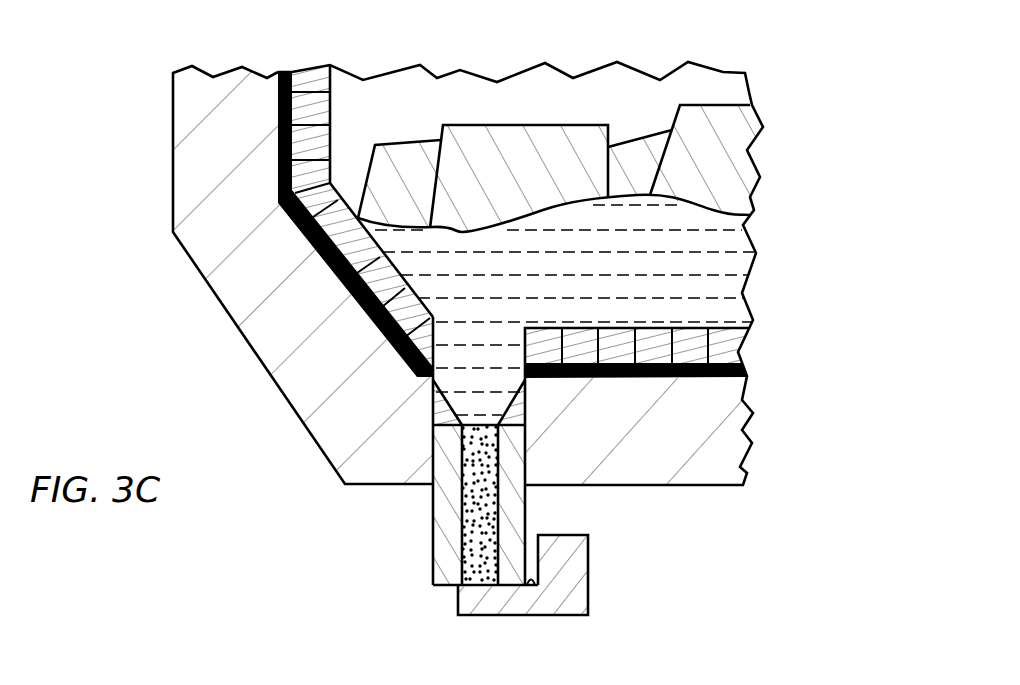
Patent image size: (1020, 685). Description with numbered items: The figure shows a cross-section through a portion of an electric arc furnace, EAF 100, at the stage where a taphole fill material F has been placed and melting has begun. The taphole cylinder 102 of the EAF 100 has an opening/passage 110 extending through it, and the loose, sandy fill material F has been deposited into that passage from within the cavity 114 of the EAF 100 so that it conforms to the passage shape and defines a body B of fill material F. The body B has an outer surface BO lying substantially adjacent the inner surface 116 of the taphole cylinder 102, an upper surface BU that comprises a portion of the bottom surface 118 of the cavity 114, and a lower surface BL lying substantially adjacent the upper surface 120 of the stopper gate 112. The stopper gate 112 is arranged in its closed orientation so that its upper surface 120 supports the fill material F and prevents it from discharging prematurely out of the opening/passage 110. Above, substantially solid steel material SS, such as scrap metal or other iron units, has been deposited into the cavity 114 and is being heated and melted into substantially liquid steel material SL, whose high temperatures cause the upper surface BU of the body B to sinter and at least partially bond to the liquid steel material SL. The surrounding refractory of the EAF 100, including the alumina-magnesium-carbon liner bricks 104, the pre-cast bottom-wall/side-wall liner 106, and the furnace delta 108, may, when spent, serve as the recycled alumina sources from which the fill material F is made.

The electric arc furnace 100 is at (258, 299).
The taphole cylinder 102 is at (420, 520).
The alumina-magnesium-carbon liner bricks 104 is at (752, 338).
The pre-cast bottom-wall/side-wall liner 106 is at (752, 372).
The furnace delta 108 is at (431, 410).
The opening/passage 110 is at (457, 502).
The stopper gate 112 is at (604, 552).
The cavity 114 is at (635, 100).
The inner surface 116 is at (468, 560).
The bottom surface 118 is at (692, 384).
The upper surface 120 is at (533, 588).
The substantially solid steel material SS is at (470, 110).
The substantially liquid steel material SL is at (712, 287).
The taphole fill material F is at (484, 515).
The body B is at (458, 552).
The upper surface BU is at (462, 450).
The outer surface BO is at (460, 531).
The lower surface BL is at (478, 587).